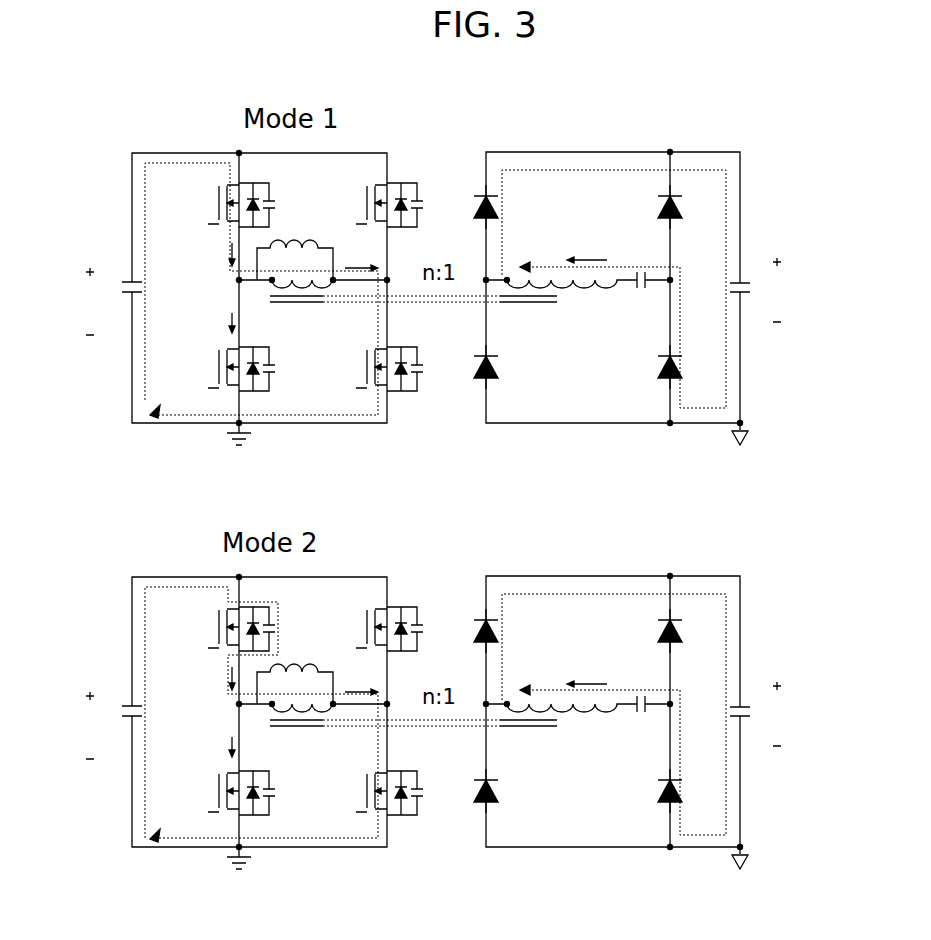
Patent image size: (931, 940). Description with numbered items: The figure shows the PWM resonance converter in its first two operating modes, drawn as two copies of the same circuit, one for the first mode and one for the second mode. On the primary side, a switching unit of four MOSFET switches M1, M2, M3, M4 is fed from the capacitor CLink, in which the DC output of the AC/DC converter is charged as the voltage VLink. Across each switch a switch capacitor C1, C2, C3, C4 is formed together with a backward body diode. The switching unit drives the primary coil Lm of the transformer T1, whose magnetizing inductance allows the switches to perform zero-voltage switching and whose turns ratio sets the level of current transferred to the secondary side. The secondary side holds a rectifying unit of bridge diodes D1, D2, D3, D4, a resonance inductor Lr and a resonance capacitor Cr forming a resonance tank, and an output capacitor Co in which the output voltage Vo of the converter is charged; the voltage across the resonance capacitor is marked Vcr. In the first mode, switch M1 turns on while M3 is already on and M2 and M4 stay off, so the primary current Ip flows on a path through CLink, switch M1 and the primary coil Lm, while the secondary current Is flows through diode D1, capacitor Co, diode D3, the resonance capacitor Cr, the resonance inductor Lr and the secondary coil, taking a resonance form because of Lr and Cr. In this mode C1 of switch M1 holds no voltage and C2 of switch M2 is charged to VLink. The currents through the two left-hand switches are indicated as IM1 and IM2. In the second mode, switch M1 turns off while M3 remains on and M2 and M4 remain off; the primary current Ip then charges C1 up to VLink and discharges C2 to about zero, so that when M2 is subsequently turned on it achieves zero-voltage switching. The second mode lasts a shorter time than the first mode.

The MOSFET switch M1 is at (209, 416).
The MOSFET switch M2 is at (209, 580).
The MOSFET switch M3 is at (355, 580).
The MOSFET switch M4 is at (355, 416).
The switch capacitor C1 is at (274, 417).
The switch capacitor C2 is at (274, 581).
The switch capacitor C3 is at (420, 581).
The switch capacitor C4 is at (420, 417).
The bridge diode D1 is at (502, 419).
The bridge diode D2 is at (502, 579).
The bridge diode D3 is at (649, 579).
The bridge diode D4 is at (649, 419).
The transformer T1 is at (413, 528).
The primary coil Lm is at (307, 475).
The resonance inductor Lr is at (591, 528).
The resonance capacitor Cr is at (639, 529).
The output capacitor Co is at (708, 506).
The output voltage Vo is at (776, 512).
The capacitor CLink is at (165, 505).
The voltage VLink is at (86, 518).
The current through switch M1 IM1 is at (202, 468).
The current through switch M2 IM2 is at (202, 538).
The primary current Ip is at (358, 470).
The secondary current Is is at (584, 461).
The resonant capacitor voltage Vcr is at (629, 468).